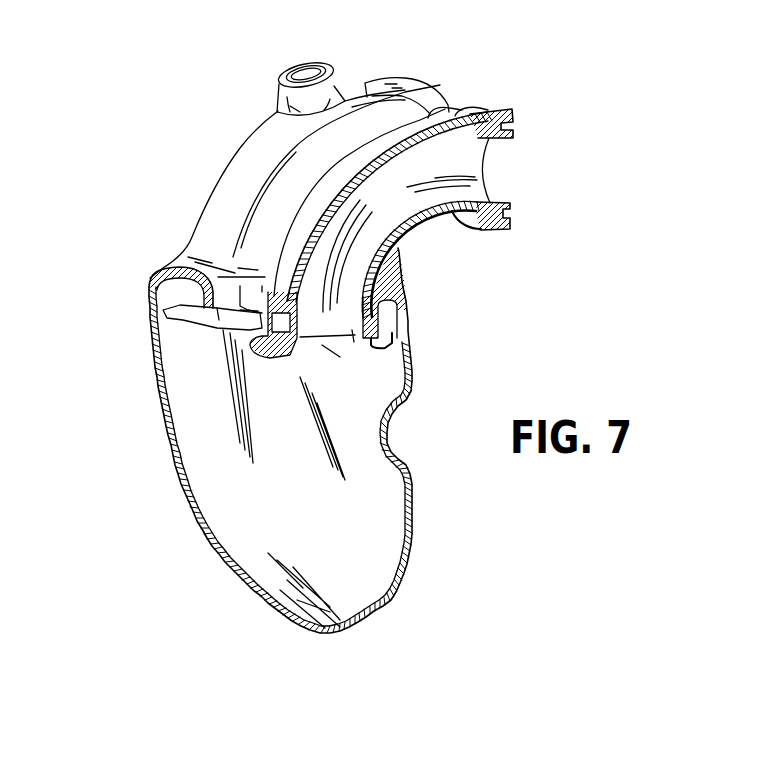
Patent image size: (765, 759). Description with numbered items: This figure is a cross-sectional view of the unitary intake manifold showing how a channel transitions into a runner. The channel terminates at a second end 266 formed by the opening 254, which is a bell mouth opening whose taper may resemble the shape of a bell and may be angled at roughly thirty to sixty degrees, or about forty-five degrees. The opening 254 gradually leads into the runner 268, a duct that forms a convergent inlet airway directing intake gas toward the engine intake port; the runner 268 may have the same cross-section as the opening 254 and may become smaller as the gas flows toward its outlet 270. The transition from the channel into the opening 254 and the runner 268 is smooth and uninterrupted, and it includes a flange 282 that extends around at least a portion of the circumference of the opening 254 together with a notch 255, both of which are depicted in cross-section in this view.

The bell mouth opening 254 is at (323, 337).
The notch 255 is at (386, 320).
The second end 266 is at (357, 347).
The runner 268 is at (360, 193).
The outlet 270 is at (487, 168).
The flange 282 is at (167, 312).